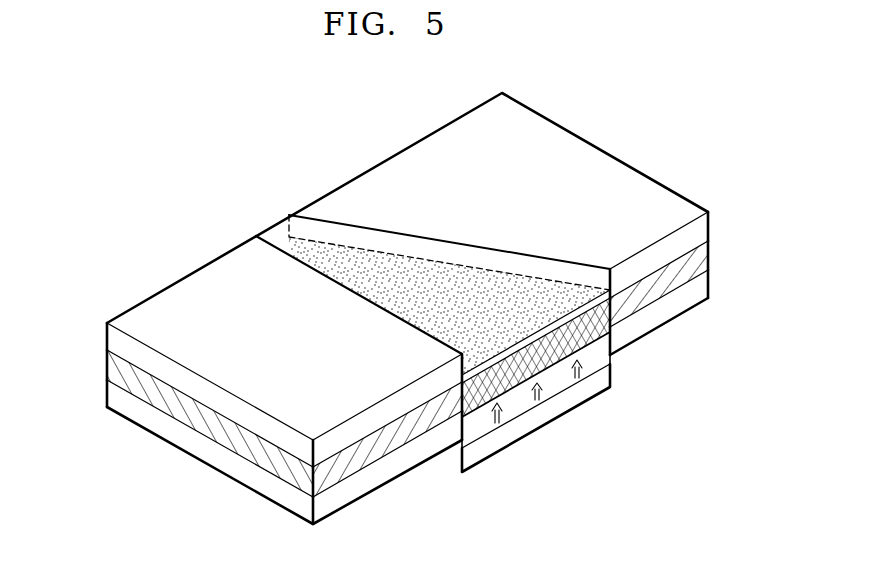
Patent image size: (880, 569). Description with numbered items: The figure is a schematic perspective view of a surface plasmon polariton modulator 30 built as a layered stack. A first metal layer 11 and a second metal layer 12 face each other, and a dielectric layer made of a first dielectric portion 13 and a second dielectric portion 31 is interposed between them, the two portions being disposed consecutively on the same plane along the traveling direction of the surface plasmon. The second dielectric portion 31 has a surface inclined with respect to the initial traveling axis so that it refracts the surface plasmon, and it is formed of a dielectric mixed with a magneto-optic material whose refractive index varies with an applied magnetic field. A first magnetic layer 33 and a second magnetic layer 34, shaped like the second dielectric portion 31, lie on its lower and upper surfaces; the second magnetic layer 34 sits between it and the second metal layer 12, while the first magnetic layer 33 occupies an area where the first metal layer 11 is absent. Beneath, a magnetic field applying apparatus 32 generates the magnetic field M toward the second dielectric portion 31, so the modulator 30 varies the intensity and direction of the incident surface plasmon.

The first metal layer 11 is at (708, 287).
The second metal layer 12 is at (708, 231).
The first dielectric portion 13 is at (708, 258).
The surface plasmon polariton modulator 30 is at (482, 393).
The second dielectric portion 31 is at (610, 366).
The magnetic field applying apparatus 32 is at (490, 453).
The first magnetic layer 33 is at (541, 374).
The second magnetic layer 34 is at (568, 356).